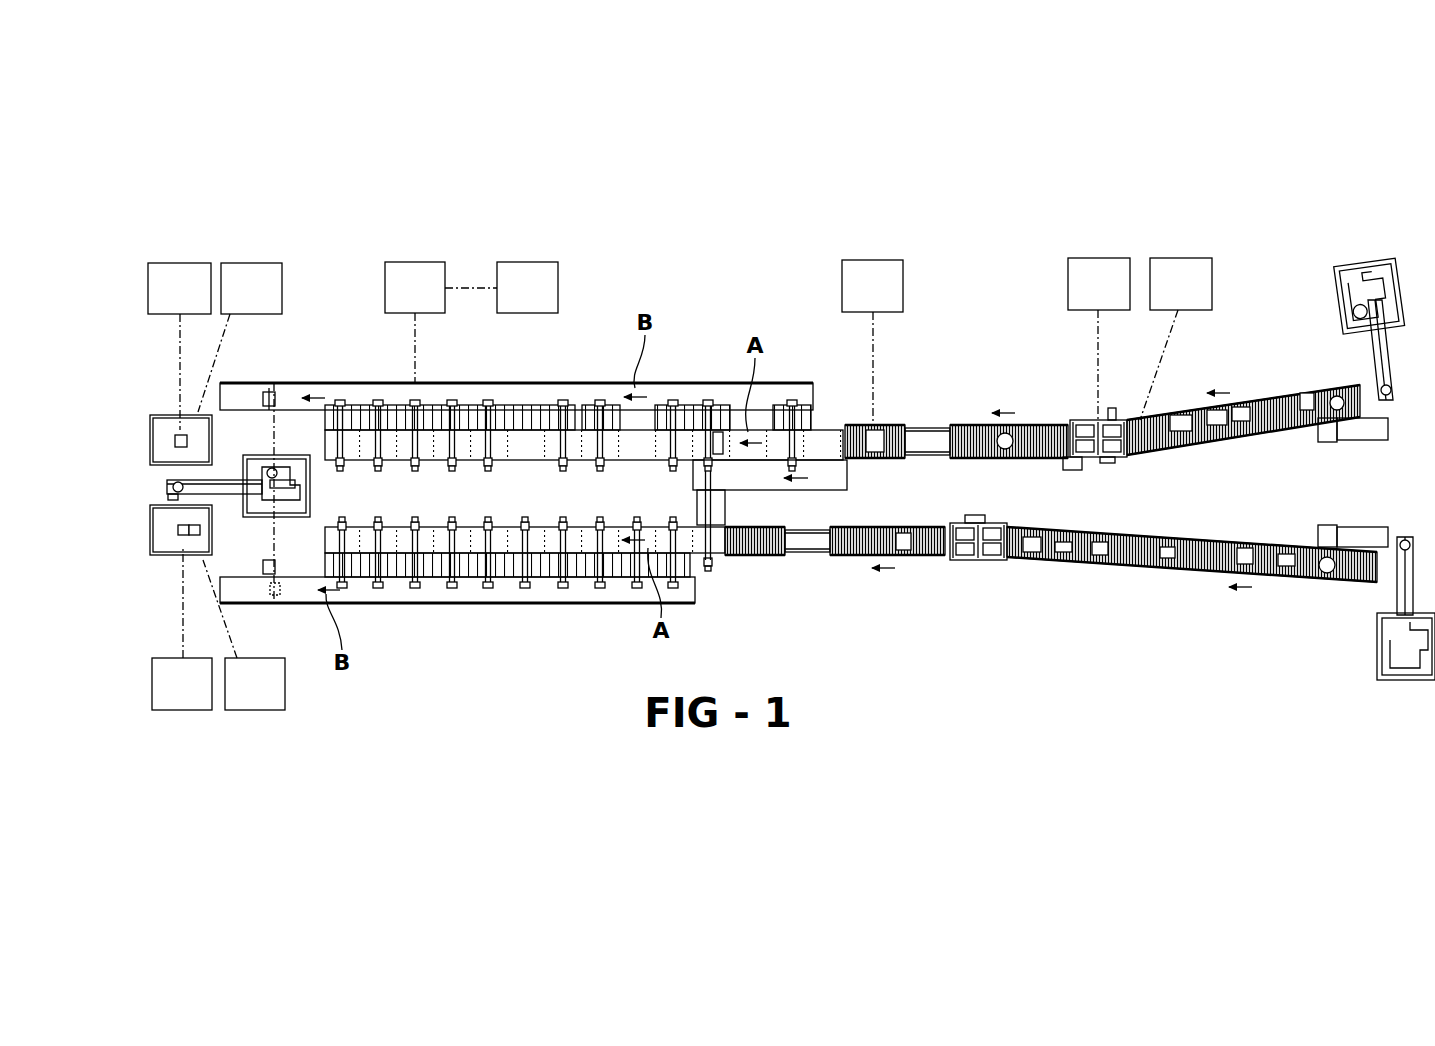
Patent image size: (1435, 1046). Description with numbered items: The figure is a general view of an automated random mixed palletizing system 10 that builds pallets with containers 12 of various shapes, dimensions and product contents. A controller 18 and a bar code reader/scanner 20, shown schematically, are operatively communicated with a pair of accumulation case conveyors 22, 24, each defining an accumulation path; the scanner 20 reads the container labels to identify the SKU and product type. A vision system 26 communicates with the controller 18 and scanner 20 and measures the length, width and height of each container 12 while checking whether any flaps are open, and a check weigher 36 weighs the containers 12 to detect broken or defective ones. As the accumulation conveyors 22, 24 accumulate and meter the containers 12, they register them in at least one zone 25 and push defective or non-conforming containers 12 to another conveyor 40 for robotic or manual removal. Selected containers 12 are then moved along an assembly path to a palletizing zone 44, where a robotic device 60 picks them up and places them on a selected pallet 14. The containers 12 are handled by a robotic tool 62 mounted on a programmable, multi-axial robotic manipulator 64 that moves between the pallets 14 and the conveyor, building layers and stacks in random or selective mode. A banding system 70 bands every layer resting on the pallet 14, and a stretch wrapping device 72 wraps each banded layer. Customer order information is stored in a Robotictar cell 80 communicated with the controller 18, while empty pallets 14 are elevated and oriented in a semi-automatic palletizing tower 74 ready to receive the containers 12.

The system 10 is at (725, 268).
The container 12 is at (181, 433).
The pallet 14 is at (163, 425).
The controller 18 is at (413, 275).
The bar code reader/scanner 20 is at (1178, 272).
The accumulation case conveyor 22 is at (965, 418).
The accumulation case conveyor 24 is at (920, 563).
The zone 25 is at (348, 462).
The vision system 26 is at (1097, 272).
The check weigher 36 is at (872, 275).
The conveyor 40 is at (838, 478).
The palletizing zone 44 is at (303, 546).
The robotic device 60 is at (296, 452).
The robotic tool 62 is at (167, 487).
The robotic manipulator 64 is at (260, 490).
The banding system 70 is at (253, 275).
The stretch wrapping device 72 is at (183, 275).
The semi-automatic palletizing tower 74 is at (150, 443).
The Robotictar cell 80 is at (523, 275).